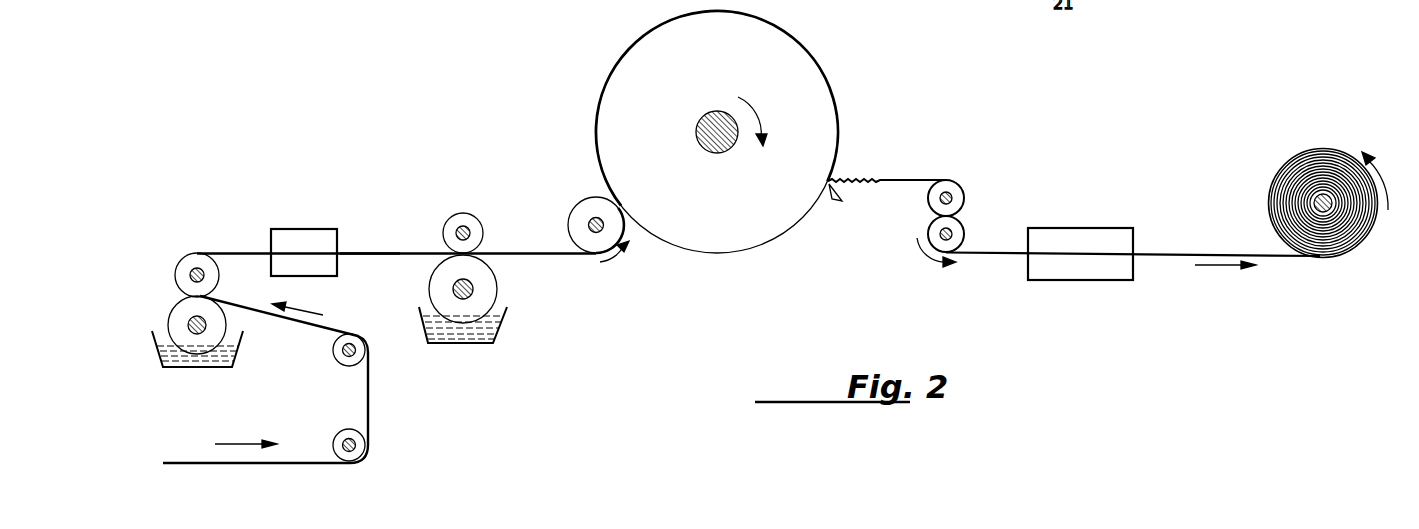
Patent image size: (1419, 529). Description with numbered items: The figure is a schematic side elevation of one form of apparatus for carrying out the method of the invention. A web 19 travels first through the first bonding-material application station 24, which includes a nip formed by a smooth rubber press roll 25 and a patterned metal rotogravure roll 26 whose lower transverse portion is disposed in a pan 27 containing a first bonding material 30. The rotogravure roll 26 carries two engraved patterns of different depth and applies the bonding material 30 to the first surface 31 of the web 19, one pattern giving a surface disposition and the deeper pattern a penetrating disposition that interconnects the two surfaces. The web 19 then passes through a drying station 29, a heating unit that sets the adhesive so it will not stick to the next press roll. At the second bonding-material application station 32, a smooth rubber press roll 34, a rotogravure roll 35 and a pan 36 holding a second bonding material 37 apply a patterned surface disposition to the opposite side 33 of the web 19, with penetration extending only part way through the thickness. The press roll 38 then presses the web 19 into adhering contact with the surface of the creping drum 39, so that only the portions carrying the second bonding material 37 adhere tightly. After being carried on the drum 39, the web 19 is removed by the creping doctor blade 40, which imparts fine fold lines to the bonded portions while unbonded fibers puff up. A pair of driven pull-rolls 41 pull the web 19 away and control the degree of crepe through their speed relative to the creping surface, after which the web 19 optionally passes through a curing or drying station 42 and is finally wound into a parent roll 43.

The web 19 is at (278, 463).
The first bonding-material application station 24 is at (202, 325).
The smooth rubber press roll 25 is at (219, 272).
The patterned metal rotogravure roll 26 is at (178, 313).
The pan 27 is at (156, 355).
The drying station 29 is at (304, 229).
The first bonding material 30 is at (229, 352).
The first surface 31 is at (368, 389).
The second bonding-material application station 32 is at (479, 264).
The opposite side 33 is at (367, 256).
The smooth rubber press roll 34 is at (467, 214).
The rotogravure roll 35 is at (437, 276).
The pan 36 is at (422, 327).
The second bonding material 37 is at (500, 328).
The press roll 38 is at (588, 205).
The creping drum 39 is at (765, 232).
The creping doctor blade 40 is at (838, 201).
The driven pull-rolls 41 is at (963, 301).
The curing or drying station 42 is at (1075, 228).
The parent roll 43 is at (1295, 175).